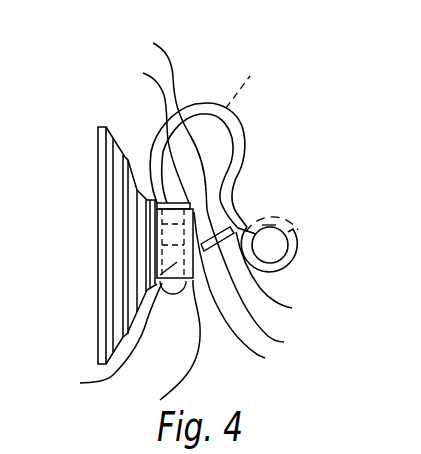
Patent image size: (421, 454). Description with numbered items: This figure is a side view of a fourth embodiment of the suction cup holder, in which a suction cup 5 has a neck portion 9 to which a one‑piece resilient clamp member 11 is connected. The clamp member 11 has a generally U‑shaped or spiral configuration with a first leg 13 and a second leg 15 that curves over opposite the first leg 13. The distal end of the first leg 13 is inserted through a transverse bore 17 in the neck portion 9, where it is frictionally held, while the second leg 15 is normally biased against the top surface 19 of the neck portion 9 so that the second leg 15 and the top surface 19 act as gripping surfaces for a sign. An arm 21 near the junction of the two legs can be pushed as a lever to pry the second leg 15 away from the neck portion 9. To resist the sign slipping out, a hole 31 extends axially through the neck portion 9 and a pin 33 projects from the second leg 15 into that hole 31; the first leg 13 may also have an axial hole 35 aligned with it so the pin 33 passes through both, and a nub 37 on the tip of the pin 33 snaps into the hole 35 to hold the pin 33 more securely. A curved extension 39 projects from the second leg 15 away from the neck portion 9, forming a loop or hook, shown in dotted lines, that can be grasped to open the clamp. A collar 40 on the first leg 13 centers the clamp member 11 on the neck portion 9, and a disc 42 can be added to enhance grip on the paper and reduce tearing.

The suction cup 5 is at (95, 220).
The neck portion 9 is at (143, 73).
The clamp member 11 is at (228, 118).
The first leg 13 is at (150, 163).
The second leg 15 is at (237, 173).
The transverse bore 17 is at (80, 383).
The top surface 19 is at (160, 400).
The arm 21 is at (252, 76).
The hole 31 is at (265, 358).
The pin 33 is at (292, 308).
The hole 35 is at (178, 246).
The nub 37 is at (284, 342).
The curved extension 39 is at (298, 257).
The collar 40 is at (87, 245).
The disc 42 is at (153, 43).